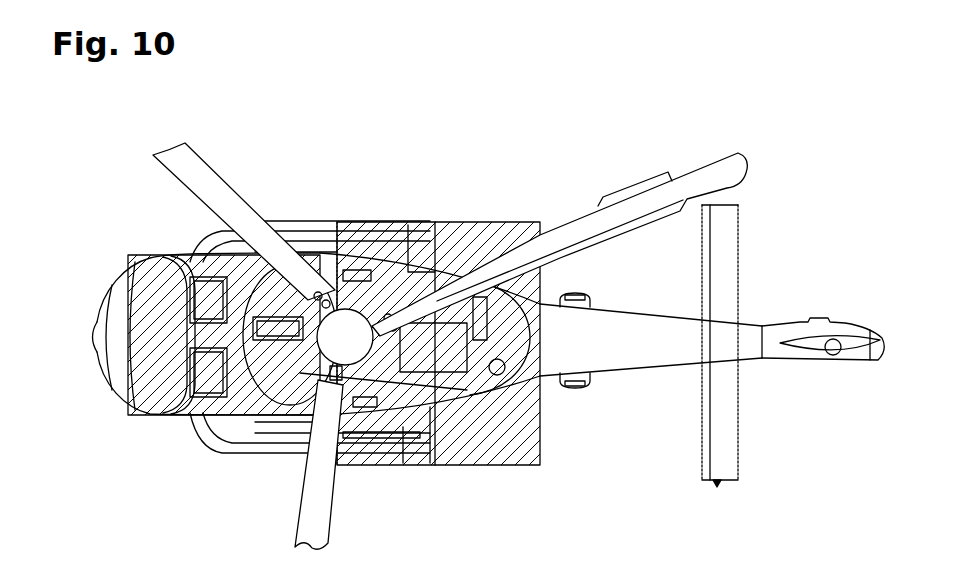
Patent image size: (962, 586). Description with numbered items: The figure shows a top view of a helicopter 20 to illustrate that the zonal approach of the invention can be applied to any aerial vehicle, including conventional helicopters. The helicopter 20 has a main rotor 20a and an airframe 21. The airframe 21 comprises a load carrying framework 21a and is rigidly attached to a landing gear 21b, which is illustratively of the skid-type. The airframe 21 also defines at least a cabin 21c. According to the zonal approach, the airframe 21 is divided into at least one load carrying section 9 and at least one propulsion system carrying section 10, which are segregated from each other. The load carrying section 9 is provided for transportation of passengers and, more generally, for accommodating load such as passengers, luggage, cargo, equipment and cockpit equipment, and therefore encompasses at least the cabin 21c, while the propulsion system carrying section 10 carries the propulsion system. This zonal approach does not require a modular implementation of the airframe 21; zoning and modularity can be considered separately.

The propulsion system carrying section 10 is at (487, 222).
The helicopter 20 is at (388, 166).
The main rotor 20a is at (755, 162).
The airframe 21 is at (95, 387).
The load carrying framework 21a is at (145, 252).
The landing gear 21b is at (322, 224).
The cabin 21c is at (180, 430).
The load carrying section 9 is at (130, 418).